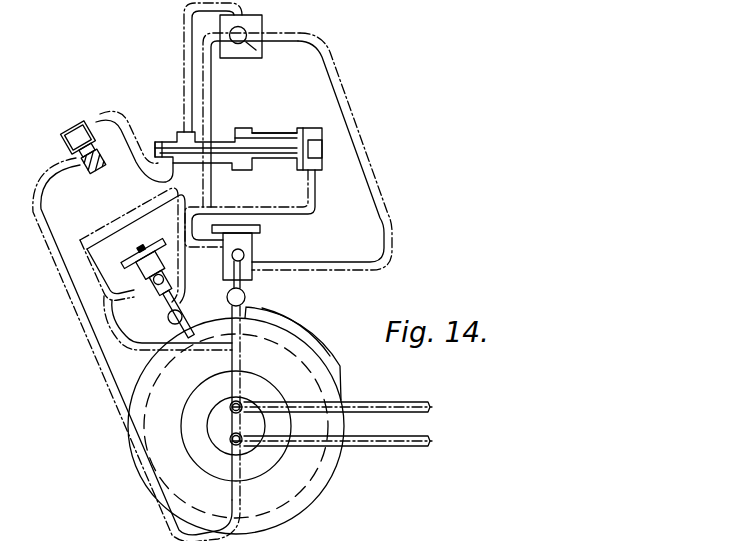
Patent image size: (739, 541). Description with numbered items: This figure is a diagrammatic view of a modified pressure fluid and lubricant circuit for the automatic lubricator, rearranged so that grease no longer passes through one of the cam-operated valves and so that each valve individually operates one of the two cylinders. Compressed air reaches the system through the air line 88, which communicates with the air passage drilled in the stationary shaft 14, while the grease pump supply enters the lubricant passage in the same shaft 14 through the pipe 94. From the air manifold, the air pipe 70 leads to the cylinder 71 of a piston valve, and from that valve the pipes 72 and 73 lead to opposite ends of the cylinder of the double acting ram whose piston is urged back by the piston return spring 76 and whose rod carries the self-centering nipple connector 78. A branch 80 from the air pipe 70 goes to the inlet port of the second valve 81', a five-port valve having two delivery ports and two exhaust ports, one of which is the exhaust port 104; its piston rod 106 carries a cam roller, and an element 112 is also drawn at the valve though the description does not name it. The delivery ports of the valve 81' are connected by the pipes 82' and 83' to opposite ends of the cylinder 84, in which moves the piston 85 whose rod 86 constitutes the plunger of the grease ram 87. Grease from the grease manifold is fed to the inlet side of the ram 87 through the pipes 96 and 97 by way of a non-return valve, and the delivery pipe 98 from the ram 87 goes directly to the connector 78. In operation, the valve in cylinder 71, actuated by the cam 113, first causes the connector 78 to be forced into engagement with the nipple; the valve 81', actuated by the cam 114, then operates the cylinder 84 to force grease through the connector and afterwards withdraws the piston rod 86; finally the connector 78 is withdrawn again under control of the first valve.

The stationary shaft 14 is at (222, 424).
The air pipe 70 is at (243, 356).
The cylinder of piston valve 71 is at (250, 242).
The pipe 72 is at (393, 218).
The pipe 73 is at (212, 98).
The piston return spring 76 is at (240, 58).
The self-centering nipple connector 78 is at (248, 44).
The branch 80 is at (122, 346).
The valve 81' is at (165, 286).
The pipe 82' is at (271, 208).
The pipe 83' is at (110, 252).
The cylinder of double acting ram 84 is at (322, 150).
The piston 85 is at (300, 130).
The piston rod 86 is at (274, 160).
The grease ram 87 is at (155, 147).
The air line 88 is at (390, 404).
The pipe 94 is at (390, 447).
The pipe 96 is at (46, 218).
The pipe 97 is at (96, 116).
The delivery pipe 98 is at (184, 46).
The exhaust port 104 is at (246, 297).
The piston rod 106 is at (246, 290).
The roller 112 is at (180, 314).
The cam 113 is at (320, 337).
The cam 114 is at (262, 308).